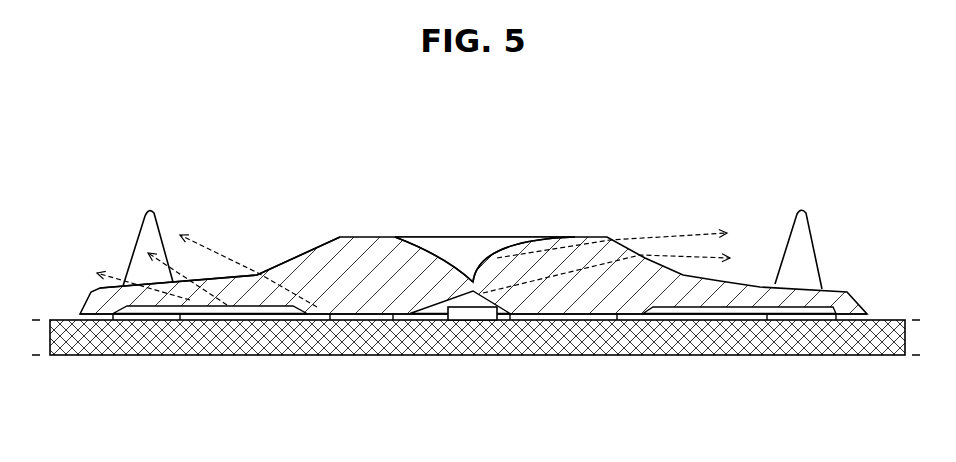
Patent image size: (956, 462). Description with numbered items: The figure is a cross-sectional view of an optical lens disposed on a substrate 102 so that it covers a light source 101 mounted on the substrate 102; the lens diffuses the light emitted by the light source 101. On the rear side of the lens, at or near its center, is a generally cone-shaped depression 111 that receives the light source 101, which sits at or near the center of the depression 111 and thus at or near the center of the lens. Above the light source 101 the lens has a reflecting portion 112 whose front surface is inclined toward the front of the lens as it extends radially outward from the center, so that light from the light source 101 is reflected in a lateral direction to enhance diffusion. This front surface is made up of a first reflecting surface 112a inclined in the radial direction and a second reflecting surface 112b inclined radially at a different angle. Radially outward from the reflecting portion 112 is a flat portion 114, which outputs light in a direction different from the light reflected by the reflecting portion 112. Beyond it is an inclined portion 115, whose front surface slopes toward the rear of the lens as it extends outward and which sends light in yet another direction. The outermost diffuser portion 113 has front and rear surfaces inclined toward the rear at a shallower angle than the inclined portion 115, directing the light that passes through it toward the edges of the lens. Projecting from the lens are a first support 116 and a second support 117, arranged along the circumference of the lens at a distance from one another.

The light source 101 is at (472, 318).
The substrate 102 is at (397, 330).
The depression 111 is at (507, 318).
The reflecting portion 112 is at (508, 173).
The first reflecting surface 112a is at (478, 268).
The second reflecting surface 112b is at (430, 250).
The diffuser portion 113 is at (727, 297).
The flat portion 114 is at (365, 237).
The inclined portion 115 is at (307, 252).
The first support 116 is at (802, 213).
The second support 117 is at (148, 212).